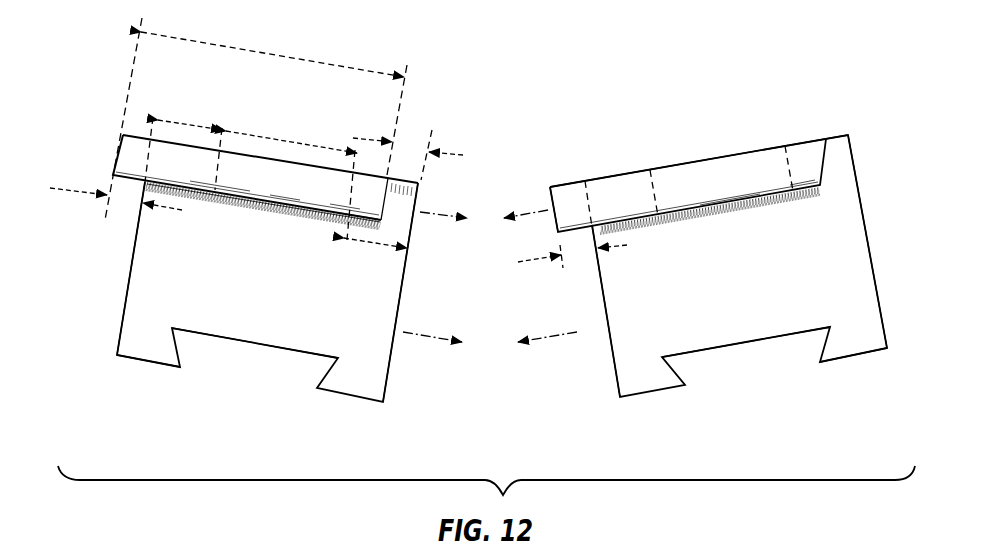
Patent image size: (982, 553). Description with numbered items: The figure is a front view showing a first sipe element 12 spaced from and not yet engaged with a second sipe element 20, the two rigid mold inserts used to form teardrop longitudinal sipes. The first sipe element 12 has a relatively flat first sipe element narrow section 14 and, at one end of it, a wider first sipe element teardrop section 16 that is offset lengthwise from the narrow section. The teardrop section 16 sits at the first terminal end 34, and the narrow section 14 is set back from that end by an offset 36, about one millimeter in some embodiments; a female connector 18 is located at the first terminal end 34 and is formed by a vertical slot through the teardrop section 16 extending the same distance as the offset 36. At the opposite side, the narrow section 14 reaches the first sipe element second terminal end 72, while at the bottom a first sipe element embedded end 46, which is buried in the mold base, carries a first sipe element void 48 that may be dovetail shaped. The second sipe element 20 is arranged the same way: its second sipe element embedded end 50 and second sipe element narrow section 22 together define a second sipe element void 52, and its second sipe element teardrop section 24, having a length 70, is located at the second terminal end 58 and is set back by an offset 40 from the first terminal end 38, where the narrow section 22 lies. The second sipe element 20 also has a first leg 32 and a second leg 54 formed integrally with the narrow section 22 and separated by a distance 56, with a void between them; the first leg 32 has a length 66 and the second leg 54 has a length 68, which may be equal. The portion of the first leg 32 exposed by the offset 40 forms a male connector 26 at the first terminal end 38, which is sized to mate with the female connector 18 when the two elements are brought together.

The first sipe element 12 is at (857, 175).
The first sipe element narrow section 14 is at (853, 285).
The first sipe element teardrop section 16 is at (702, 168).
The female connector 18 is at (550, 205).
The second sipe element 20 is at (140, 298).
The second sipe element narrow section 22 is at (147, 270).
The second sipe element teardrop section 24 is at (280, 192).
The male connector 26 is at (405, 200).
The first leg 32 is at (400, 210).
The first terminal end 34 is at (546, 224).
The offset 36 is at (627, 245).
The first terminal end 38 is at (411, 285).
The offset 40 is at (365, 137).
The first sipe element embedded end 46 is at (860, 350).
The first sipe element void 48 is at (753, 353).
The second sipe element embedded end 50 is at (133, 345).
The second sipe element void 52 is at (247, 358).
The second leg 54 is at (187, 168).
The distance 56 is at (266, 137).
The second terminal end 58 is at (106, 152).
The length 66 is at (370, 247).
The length 68 is at (190, 125).
The length 70 is at (273, 53).
The first sipe element second terminal end 72 is at (869, 228).